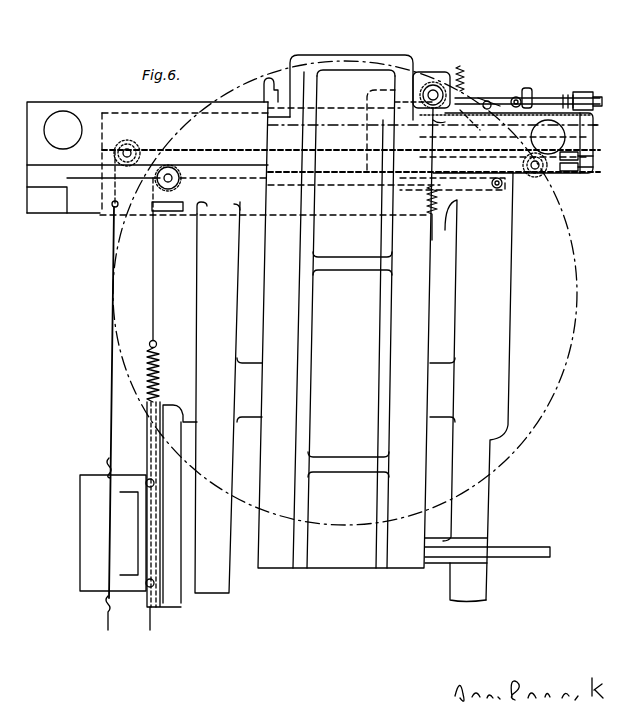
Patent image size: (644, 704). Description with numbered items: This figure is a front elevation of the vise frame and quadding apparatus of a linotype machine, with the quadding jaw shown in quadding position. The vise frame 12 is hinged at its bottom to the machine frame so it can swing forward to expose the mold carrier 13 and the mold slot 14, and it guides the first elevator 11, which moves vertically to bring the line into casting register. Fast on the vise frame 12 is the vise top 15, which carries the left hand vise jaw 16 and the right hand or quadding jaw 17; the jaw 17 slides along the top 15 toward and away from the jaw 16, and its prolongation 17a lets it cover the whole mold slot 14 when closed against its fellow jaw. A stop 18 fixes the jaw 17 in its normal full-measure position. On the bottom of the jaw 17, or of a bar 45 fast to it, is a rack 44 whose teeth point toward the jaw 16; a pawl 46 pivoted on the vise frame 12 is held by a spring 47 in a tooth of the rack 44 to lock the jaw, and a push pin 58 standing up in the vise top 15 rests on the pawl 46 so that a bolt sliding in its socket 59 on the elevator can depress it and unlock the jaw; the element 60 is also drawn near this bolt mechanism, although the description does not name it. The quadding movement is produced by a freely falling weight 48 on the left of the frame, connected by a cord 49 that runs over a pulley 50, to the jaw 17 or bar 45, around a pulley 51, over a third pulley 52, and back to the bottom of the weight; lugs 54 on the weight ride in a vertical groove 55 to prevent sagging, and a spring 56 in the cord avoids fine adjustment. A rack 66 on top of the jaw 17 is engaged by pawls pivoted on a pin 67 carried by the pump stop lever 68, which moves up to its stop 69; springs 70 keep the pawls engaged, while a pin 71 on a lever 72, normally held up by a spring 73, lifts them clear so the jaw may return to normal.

The first elevator 11 is at (350, 320).
The vise frame 12 is at (372, 387).
The mold carrier 13 is at (522, 444).
The mold slot 14 is at (331, 122).
The vise top 15 is at (58, 102).
The left hand vise jaw 16 is at (283, 76).
The right hand vise jaw 17 is at (415, 78).
The prolongation 17a is at (597, 126).
The stop 18 is at (596, 162).
The rack 44 is at (538, 176).
The bar 45 is at (372, 163).
The pawl 46 is at (455, 191).
The spring 47 is at (425, 200).
The weight 48 is at (113, 533).
The cord 49 is at (111, 418).
The pulley 50 is at (136, 150).
The pulley 51 is at (548, 137).
The third pulley 52 is at (176, 167).
The lugs 54 is at (152, 500).
The vertical groove 55 is at (160, 455).
The spring 56 is at (161, 372).
The push pin 58 is at (430, 148).
The socket 59 is at (441, 72).
The pawl 60 is at (446, 128).
The rack 66 is at (517, 141).
The pivot pin 67 is at (518, 96).
The pump stop lever 68 is at (530, 88).
The stop 69 is at (575, 96).
The springs 70 is at (506, 97).
The pin 71 is at (492, 98).
The lever 72 is at (487, 100).
The spring 73 is at (461, 66).